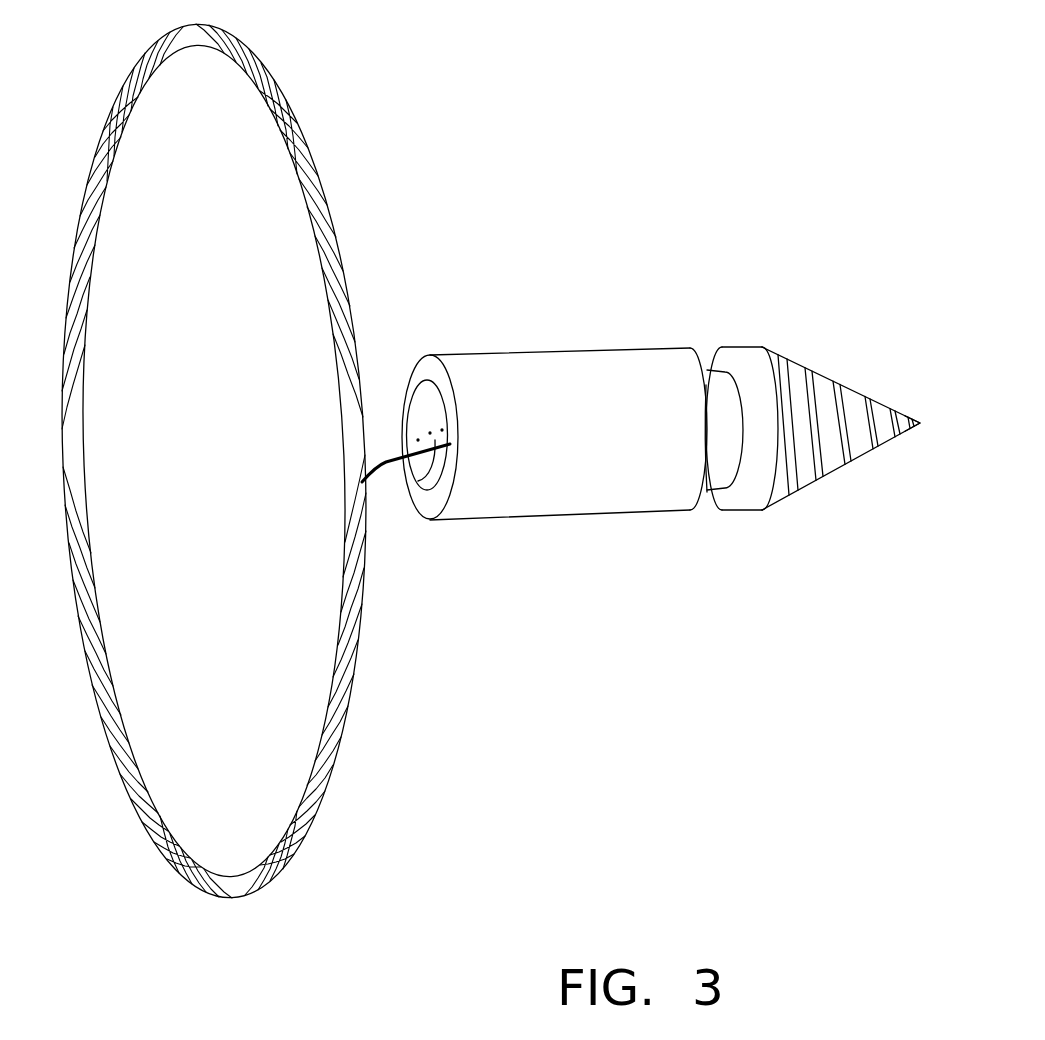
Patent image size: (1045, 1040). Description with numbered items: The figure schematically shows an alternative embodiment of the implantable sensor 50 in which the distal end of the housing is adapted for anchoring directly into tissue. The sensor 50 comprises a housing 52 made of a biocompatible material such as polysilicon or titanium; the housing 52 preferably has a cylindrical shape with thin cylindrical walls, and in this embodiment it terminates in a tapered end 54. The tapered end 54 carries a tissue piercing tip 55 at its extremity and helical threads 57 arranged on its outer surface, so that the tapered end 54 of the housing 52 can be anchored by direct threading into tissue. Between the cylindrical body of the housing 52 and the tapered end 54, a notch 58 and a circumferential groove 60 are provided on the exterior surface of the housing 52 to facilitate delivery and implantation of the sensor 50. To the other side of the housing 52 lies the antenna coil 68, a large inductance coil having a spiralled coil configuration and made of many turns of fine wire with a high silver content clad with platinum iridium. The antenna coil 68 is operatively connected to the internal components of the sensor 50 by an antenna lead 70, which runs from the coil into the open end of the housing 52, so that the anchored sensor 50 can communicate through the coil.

The sensor 50 is at (642, 297).
The housing 52 is at (540, 348).
The tapered end 54 is at (844, 412).
The tissue piercing tip 55 is at (921, 421).
The helical threads 57 is at (845, 464).
The notch 58 is at (718, 360).
The circumferential groove 60 is at (706, 508).
The antenna coil 68 is at (333, 283).
The antenna lead 70 is at (392, 468).